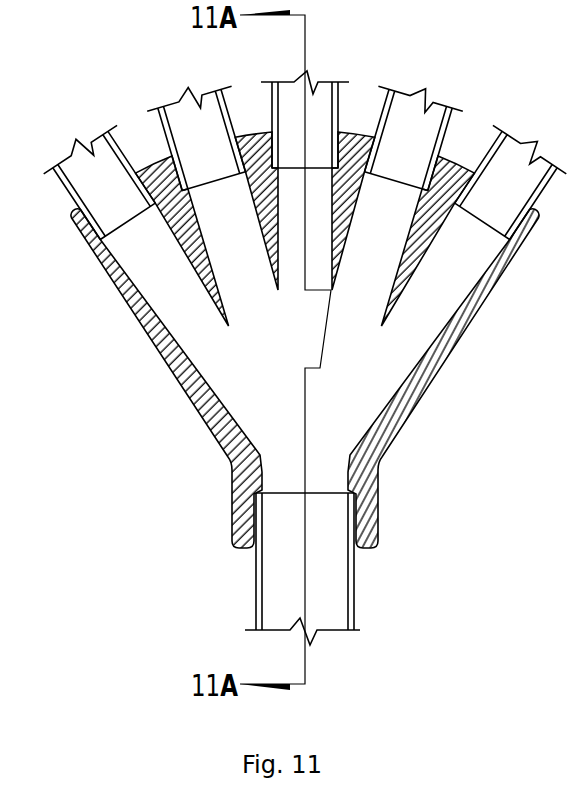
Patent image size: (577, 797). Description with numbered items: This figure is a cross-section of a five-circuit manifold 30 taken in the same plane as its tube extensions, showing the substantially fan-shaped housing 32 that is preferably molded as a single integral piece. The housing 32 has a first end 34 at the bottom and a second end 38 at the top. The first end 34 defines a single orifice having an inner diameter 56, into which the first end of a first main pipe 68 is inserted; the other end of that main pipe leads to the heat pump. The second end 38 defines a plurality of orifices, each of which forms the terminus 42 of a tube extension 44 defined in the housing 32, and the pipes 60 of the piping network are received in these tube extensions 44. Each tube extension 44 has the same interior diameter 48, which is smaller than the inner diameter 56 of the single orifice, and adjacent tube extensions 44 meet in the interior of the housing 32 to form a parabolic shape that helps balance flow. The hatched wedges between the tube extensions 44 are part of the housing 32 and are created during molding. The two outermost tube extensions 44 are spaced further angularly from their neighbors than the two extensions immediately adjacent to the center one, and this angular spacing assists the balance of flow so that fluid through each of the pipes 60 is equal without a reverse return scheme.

The manifold 30 is at (175, 395).
The housing 32 is at (462, 378).
The first end 34 is at (462, 378).
The second end 38 is at (462, 378).
The terminus 42 is at (523, 221).
The tube extension 44 is at (308, 378).
The interior diameter 48 is at (177, 247).
The inner diameter 56 is at (347, 503).
The pipes 60 is at (426, 62).
The first main pipe 68 is at (359, 590).